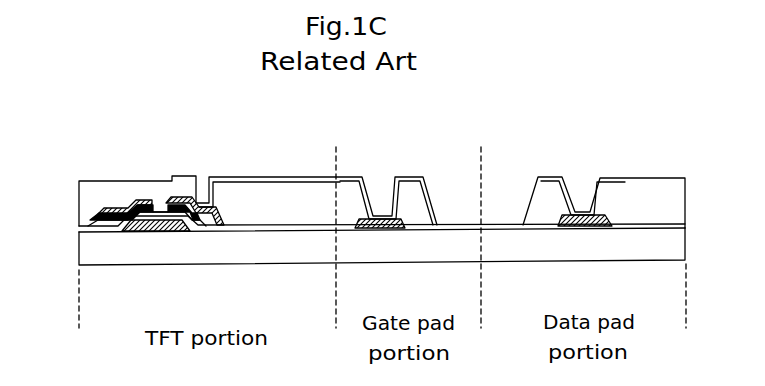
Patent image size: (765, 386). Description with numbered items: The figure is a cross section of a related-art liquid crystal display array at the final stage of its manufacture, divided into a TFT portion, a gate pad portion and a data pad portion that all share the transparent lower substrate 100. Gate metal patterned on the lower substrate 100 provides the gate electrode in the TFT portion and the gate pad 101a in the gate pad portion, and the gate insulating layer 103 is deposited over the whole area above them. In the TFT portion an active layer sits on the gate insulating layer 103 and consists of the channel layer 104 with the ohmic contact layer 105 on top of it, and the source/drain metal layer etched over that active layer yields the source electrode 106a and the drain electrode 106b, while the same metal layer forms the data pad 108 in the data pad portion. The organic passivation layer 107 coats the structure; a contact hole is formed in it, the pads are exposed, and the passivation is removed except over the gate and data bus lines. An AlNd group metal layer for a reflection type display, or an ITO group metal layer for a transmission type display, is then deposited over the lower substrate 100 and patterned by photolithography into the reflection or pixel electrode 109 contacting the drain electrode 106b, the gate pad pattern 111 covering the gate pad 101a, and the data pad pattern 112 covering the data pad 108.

The lower substrate 100 is at (79, 251).
The gate pad 101a is at (378, 230).
The gate insulating layer 103 is at (88, 231).
The channel layer 104 is at (95, 226).
The ohmic contact layer 105 is at (94, 217).
The source electrode 106a is at (128, 197).
The drain electrode 106b is at (176, 198).
The organic passivation layer 107 is at (685, 207).
The data pad 108 is at (580, 228).
The pixel electrode 109 is at (261, 177).
The gate pad pattern 111 is at (413, 176).
The data pad pattern 112 is at (617, 177).